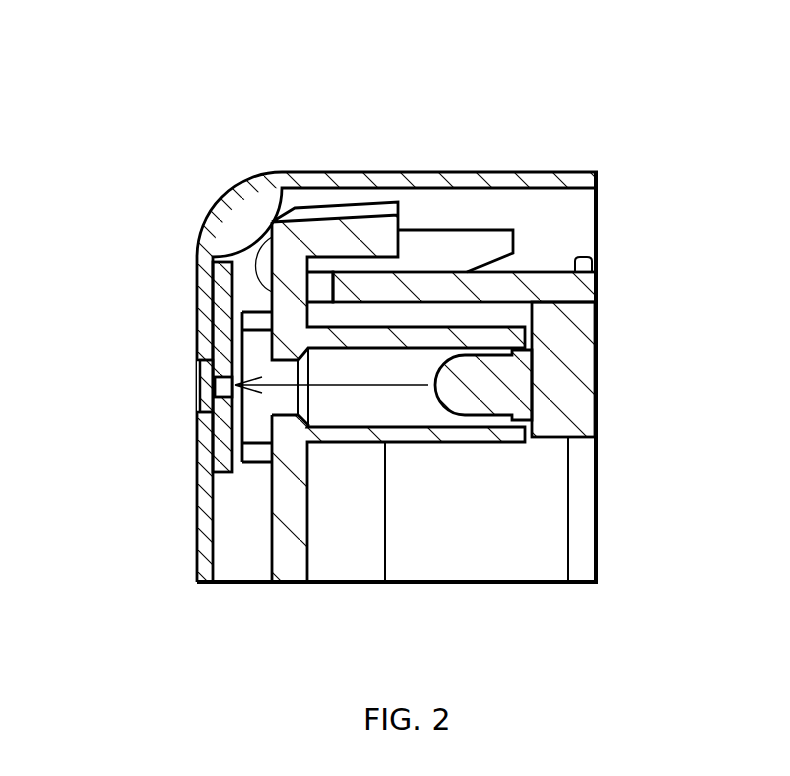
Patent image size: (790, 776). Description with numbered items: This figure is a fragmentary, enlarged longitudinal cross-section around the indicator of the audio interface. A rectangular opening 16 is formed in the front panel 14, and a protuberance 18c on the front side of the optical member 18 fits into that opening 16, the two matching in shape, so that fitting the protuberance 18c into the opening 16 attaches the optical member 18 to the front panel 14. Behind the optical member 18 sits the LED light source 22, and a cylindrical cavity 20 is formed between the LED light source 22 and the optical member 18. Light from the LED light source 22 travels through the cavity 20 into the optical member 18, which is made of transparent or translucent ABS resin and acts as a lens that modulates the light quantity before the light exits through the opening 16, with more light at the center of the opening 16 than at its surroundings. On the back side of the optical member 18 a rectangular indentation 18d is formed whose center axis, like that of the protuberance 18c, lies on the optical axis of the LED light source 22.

The front panel 14 is at (438, 172).
The rectangular opening 16 is at (172, 410).
The optical member 18 is at (212, 262).
The protuberance 18c is at (208, 353).
The rectangular indentation 18d is at (238, 390).
The cylindrical cavity 20 is at (384, 427).
The LED light source 22 is at (495, 357).